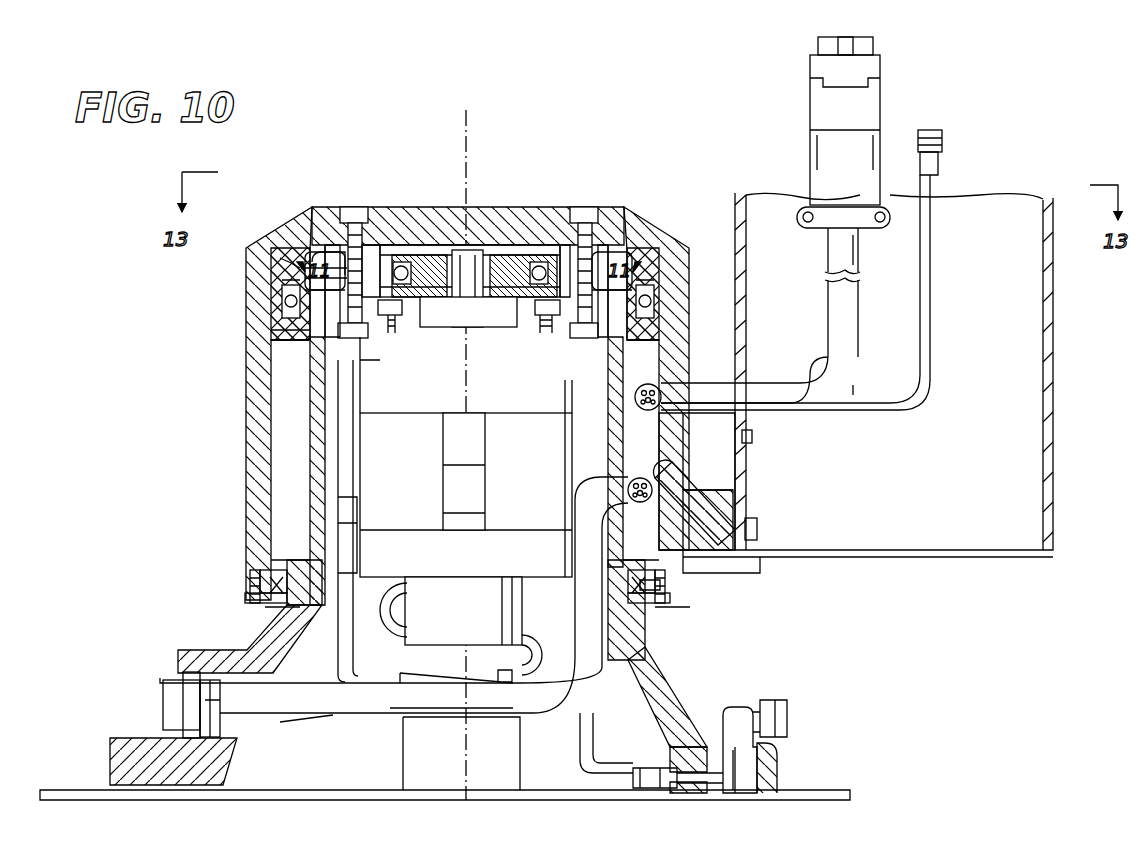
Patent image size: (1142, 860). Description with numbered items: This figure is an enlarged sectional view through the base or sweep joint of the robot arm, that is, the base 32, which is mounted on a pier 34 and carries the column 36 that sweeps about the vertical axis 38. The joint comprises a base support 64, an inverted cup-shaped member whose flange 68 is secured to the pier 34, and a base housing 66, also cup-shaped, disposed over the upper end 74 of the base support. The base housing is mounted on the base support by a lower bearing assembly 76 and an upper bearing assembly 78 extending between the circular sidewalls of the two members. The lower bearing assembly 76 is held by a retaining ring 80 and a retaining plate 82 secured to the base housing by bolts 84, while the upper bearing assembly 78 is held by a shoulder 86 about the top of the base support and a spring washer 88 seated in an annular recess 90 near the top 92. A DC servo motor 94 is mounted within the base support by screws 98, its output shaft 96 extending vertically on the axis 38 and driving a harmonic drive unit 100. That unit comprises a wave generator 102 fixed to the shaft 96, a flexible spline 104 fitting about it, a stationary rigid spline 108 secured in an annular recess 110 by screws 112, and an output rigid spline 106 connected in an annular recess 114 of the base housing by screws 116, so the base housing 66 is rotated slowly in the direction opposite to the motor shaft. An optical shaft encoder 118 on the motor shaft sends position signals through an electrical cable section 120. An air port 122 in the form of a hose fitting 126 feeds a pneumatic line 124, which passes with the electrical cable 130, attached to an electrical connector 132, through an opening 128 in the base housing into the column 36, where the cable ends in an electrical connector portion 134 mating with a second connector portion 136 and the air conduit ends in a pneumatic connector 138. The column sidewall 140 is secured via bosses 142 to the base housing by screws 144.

The base 32 is at (481, 200).
The pier 34 is at (810, 796).
The column 36 is at (868, 375).
The vertical axis 38 is at (469, 128).
The base support 64 is at (308, 418).
The base housing 66 is at (440, 212).
The flange 68 is at (770, 772).
The upper end 74 is at (278, 336).
The lower bearing assembly 76 is at (255, 592).
The upper bearing assembly 78 is at (284, 303).
The retaining ring 80 is at (658, 582).
The retaining plate 82 is at (278, 608).
The bolts 84 is at (262, 604).
The shoulder 86 is at (278, 350).
The spring washer 88 is at (284, 292).
The annular recess 90 is at (282, 260).
The top 92 is at (330, 245).
The DC servo motor 94 is at (466, 457).
The output shaft 96 is at (480, 312).
The screws 98 is at (402, 326).
The harmonic drive unit 100 is at (500, 268).
The wave generator 102 is at (511, 264).
The flexible spline 104 is at (398, 253).
The rigid spline 106 is at (386, 245).
The rigid spline 108 is at (367, 292).
The annular recess 110 is at (338, 240).
The screws 112 is at (352, 207).
The annular recess 114 is at (305, 268).
The screws 116 is at (352, 335).
The optical shaft encoder 118 is at (451, 529).
The electrical cable section 120 is at (382, 622).
The air port 122 is at (727, 777).
The pneumatic line 124 is at (878, 412).
The hose fitting 126 is at (773, 714).
The opening 128 is at (678, 437).
The electrical cable 130 is at (848, 342).
The electrical connector 132 is at (165, 706).
The electrical connector portion 134 is at (822, 148).
The second connector portion 136 is at (876, 58).
The pneumatic connector 138 is at (941, 143).
The sidewall 140 is at (738, 492).
The bosses 142 is at (728, 552).
The screws 144 is at (757, 530).